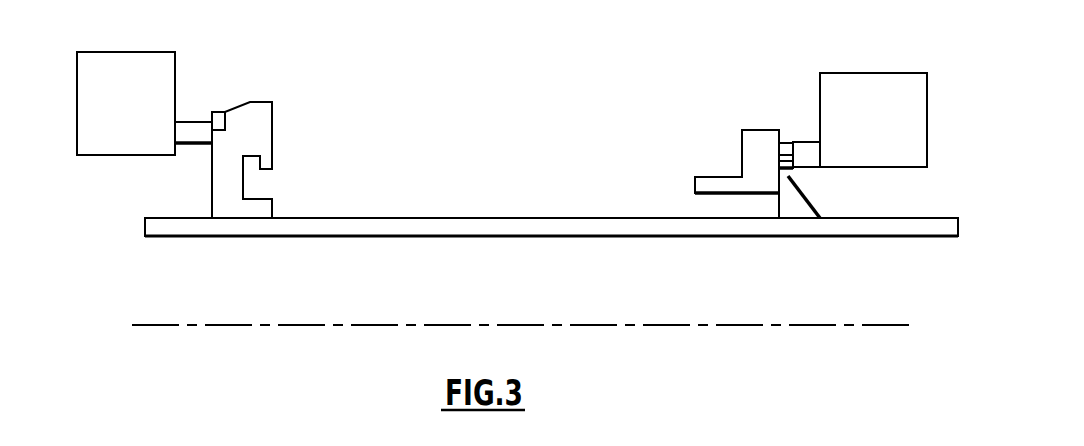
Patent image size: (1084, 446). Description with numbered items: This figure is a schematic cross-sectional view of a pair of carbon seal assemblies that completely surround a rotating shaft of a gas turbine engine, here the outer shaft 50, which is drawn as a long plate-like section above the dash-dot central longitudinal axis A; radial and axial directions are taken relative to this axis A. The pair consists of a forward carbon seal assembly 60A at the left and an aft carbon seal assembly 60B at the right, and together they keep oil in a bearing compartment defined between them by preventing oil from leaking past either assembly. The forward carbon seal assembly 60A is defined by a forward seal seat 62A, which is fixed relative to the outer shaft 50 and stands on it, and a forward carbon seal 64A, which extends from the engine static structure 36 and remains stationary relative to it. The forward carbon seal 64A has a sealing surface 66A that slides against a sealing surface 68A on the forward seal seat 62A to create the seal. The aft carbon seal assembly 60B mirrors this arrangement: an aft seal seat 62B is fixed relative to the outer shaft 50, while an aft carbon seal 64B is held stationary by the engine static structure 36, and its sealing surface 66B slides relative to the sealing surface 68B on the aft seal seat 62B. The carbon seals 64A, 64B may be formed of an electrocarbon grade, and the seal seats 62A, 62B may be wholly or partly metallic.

The engine static structure 36 is at (140, 108).
The outer shaft 50 is at (545, 225).
The central longitudinal axis A is at (753, 325).
The forward carbon seal assembly 60A is at (150, 176).
The forward seal seat 62A is at (248, 137).
The forward carbon seal 64A is at (193, 132).
The sealing surface 66A is at (214, 133).
The sealing surface 68A is at (212, 135).
The aft carbon seal assembly 60B is at (806, 182).
The aft seal seat 62B is at (757, 167).
The aft carbon seal 64B is at (806, 141).
The sealing surface 66B is at (793, 155).
The sealing surface 68B is at (795, 157).